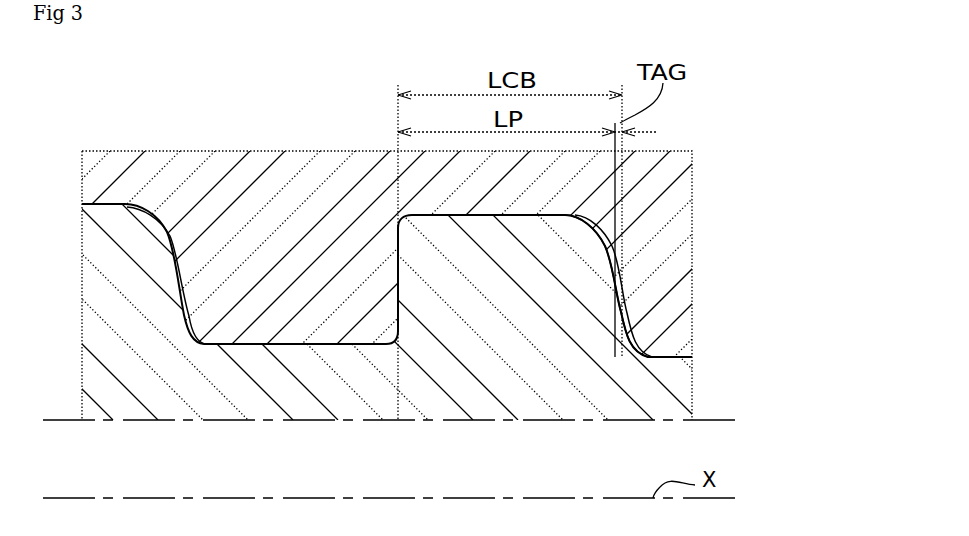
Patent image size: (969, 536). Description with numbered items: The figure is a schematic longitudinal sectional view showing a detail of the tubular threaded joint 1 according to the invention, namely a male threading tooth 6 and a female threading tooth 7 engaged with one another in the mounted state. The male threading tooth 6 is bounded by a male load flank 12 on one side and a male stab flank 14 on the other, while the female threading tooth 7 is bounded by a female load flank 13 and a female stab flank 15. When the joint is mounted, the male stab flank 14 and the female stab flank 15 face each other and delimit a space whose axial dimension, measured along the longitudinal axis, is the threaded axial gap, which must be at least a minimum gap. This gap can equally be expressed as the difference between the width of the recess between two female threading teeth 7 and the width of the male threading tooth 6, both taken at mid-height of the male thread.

The tubular threaded joint 1 is at (387, 301).
The male threading tooth 6 is at (510, 263).
The female threading tooth 7 is at (277, 282).
The male load flank 12 is at (400, 272).
The female load flank 13 is at (398, 295).
The male stab flank 14 is at (613, 322).
The female stab flank 15 is at (623, 317).